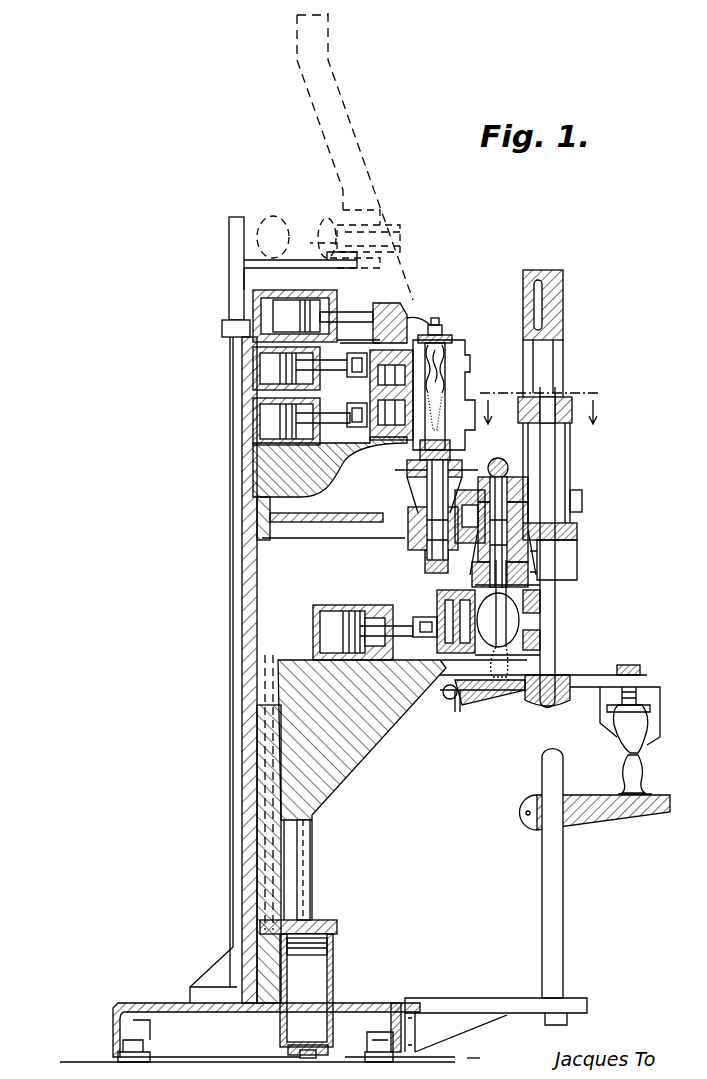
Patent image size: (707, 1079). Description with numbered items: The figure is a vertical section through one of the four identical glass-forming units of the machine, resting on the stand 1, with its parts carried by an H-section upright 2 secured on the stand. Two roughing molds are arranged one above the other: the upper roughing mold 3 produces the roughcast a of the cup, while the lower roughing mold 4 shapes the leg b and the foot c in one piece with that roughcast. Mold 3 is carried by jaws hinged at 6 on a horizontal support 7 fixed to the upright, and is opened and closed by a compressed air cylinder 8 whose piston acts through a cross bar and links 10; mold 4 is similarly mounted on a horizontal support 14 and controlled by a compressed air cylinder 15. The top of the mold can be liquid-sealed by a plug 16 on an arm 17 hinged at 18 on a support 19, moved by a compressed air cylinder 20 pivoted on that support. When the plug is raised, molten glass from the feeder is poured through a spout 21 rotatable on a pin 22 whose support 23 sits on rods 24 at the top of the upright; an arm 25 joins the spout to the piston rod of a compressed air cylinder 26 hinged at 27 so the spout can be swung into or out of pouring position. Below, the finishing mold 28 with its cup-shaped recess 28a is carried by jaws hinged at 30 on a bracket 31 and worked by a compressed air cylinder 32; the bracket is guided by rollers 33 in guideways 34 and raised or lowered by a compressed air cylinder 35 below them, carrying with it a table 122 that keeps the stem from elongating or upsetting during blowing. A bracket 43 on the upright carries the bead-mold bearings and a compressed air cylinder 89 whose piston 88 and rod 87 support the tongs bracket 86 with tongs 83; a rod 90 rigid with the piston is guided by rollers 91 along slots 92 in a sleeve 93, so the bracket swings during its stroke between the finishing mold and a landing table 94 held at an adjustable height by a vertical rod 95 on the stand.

The stand 1 is at (162, 1003).
The upright 2 is at (242, 637).
The roughing mold 3 is at (452, 460).
The roughing mold 4 is at (450, 382).
The hinge 6 is at (385, 440).
The horizontal support 7 is at (310, 472).
The compressed air cylinder 8 is at (301, 421).
The link 10 is at (542, 397).
The horizontal support 14 is at (352, 378).
The compressed air cylinder 15 is at (301, 368).
The plug 16 is at (440, 340).
The arm 17 is at (413, 325).
The hinge 18 is at (378, 312).
The support 19 is at (352, 341).
The compressed air cylinder 20 is at (318, 300).
The spout 21 is at (352, 120).
The pin 22 is at (382, 216).
The support 23 is at (292, 268).
The rod 24 is at (232, 258).
The arm 25 is at (402, 241).
The compressed air cylinder 26 is at (310, 218).
The hinge 27 is at (272, 216).
The finishing mold 28 is at (507, 618).
The cup-shaped recess 28a is at (515, 636).
The hinge pin 30 is at (442, 610).
The bracket 31 is at (398, 716).
The compressed air cylinder 32 is at (332, 606).
The roller 33 is at (292, 668).
The guideway 34 is at (288, 906).
The compressed air cylinder 35 is at (298, 989).
The bracket 43 is at (333, 539).
The tongs 83 is at (662, 697).
The bracket 86 is at (580, 680).
The piston rod 87 is at (545, 612).
The piston 88 is at (578, 537).
The compressed air cylinder 89 is at (523, 453).
The rod 90 is at (548, 476).
The roller 91 is at (556, 396).
The slot 92 is at (558, 353).
The sleeve 93 is at (564, 323).
The landing table 94 is at (575, 806).
The vertical rod 95 is at (564, 913).
The table 122 is at (494, 697).
The cup roughcast a is at (640, 740).
The leg b is at (641, 778).
The foot c is at (652, 794).